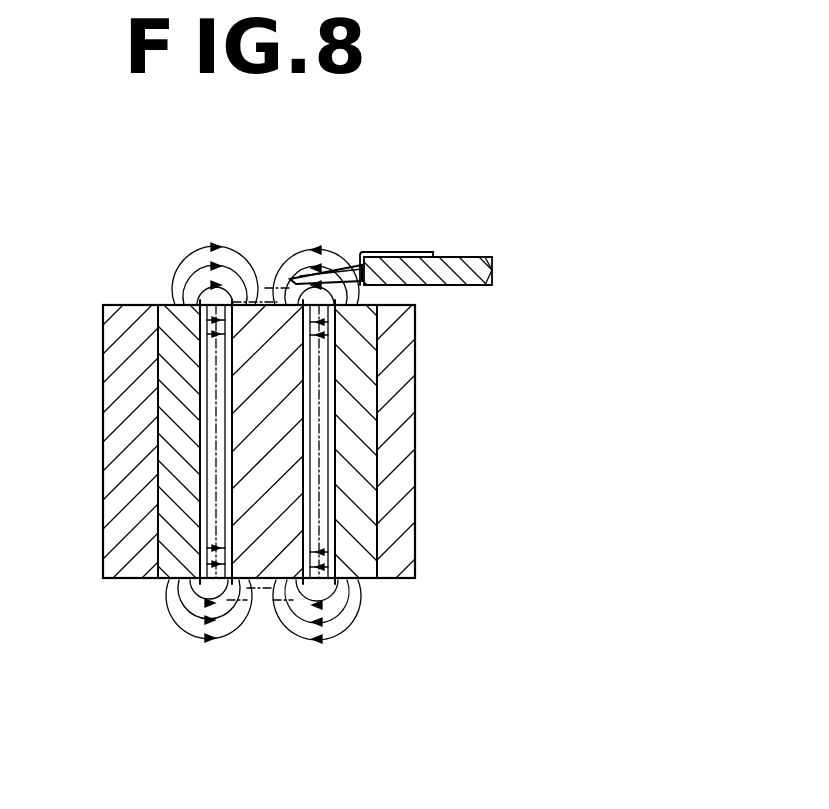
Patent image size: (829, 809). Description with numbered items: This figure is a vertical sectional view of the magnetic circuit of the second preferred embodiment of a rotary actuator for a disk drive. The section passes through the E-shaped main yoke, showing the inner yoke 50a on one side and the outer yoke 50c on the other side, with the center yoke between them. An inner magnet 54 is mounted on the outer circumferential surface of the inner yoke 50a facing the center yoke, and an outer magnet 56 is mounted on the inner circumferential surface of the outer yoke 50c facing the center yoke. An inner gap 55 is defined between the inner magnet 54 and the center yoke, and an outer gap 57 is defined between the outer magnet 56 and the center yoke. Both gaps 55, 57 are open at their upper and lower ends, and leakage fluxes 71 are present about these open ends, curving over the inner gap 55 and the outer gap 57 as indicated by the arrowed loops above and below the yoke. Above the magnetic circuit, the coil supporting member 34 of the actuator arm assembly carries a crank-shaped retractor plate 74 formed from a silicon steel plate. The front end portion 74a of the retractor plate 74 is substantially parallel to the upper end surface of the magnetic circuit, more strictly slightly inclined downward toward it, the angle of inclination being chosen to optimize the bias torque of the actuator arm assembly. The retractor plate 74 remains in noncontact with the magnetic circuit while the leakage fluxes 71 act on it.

The coil supporting member 34 is at (478, 258).
The inner yoke 50a is at (407, 340).
The outer yoke 50c is at (122, 333).
The inner magnet 54 is at (368, 387).
The inner gap 55 is at (320, 470).
The outer magnet 56 is at (170, 393).
The outer gap 57 is at (200, 453).
The leakage fluxes 71 is at (178, 268).
The retractor plate 74 is at (405, 252).
The front end portion 74a is at (338, 262).